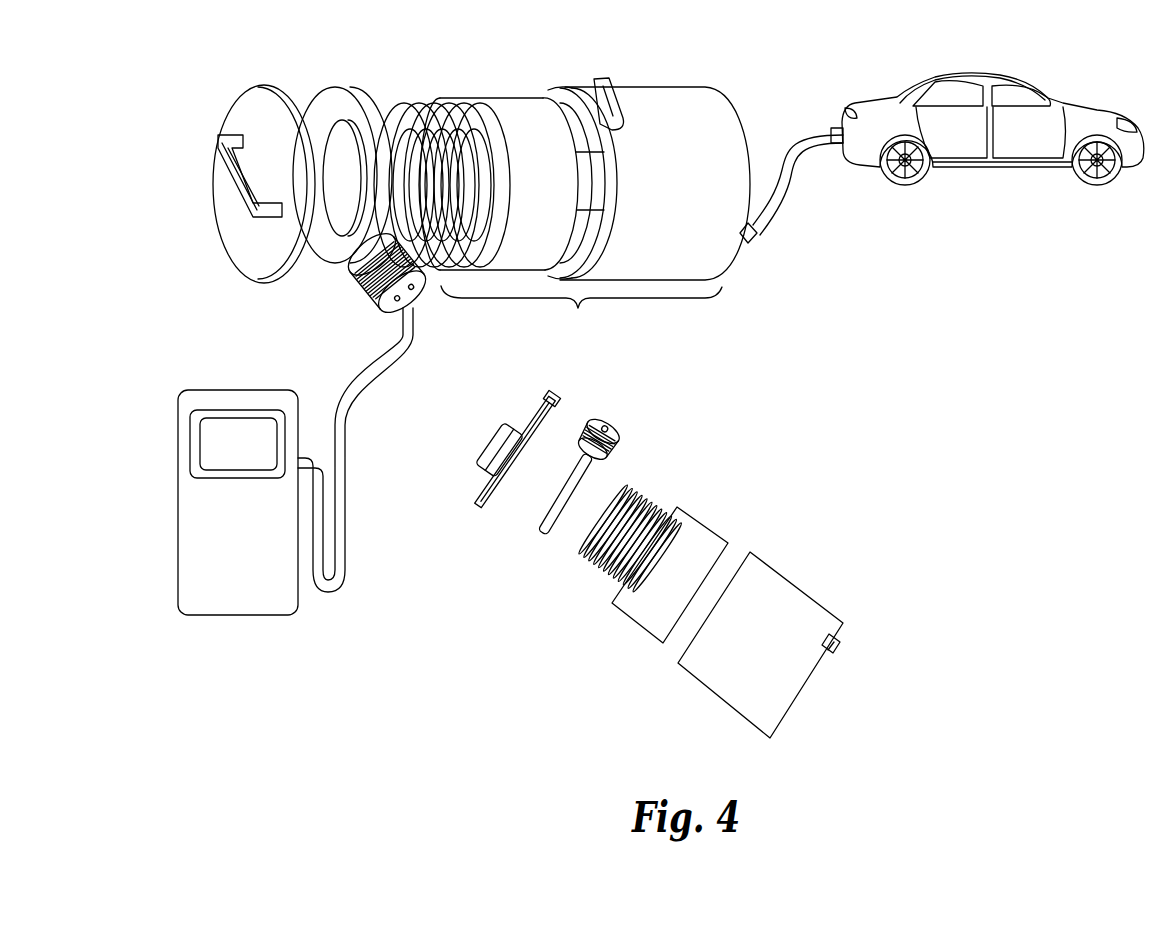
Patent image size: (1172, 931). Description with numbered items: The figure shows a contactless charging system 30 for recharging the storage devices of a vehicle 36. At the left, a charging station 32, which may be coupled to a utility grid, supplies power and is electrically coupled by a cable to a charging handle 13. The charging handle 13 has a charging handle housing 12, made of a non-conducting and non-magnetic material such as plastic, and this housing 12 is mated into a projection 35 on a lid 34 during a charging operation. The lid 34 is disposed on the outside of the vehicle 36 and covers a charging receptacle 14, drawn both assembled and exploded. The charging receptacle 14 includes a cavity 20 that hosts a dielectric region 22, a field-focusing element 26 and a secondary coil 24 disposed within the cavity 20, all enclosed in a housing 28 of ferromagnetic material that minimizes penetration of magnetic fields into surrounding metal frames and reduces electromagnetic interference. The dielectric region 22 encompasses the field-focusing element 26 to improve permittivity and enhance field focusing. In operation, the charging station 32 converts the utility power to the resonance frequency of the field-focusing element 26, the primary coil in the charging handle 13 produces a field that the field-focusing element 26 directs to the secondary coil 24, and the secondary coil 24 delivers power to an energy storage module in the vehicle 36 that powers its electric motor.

The charging handle housing 12 is at (364, 112).
The charging handle 13 is at (354, 280).
The charging receptacle 14 is at (581, 311).
The cavity 20 is at (575, 120).
The dielectric region 22 is at (500, 104).
The secondary coil 24 is at (850, 654).
The field-focusing element 26 is at (416, 108).
The housing 28 is at (648, 98).
The contactless charging system 30 is at (746, 80).
The charging station 32 is at (208, 384).
The lid 34 is at (248, 108).
The projection 35 is at (512, 492).
The vehicle 36 is at (1072, 86).